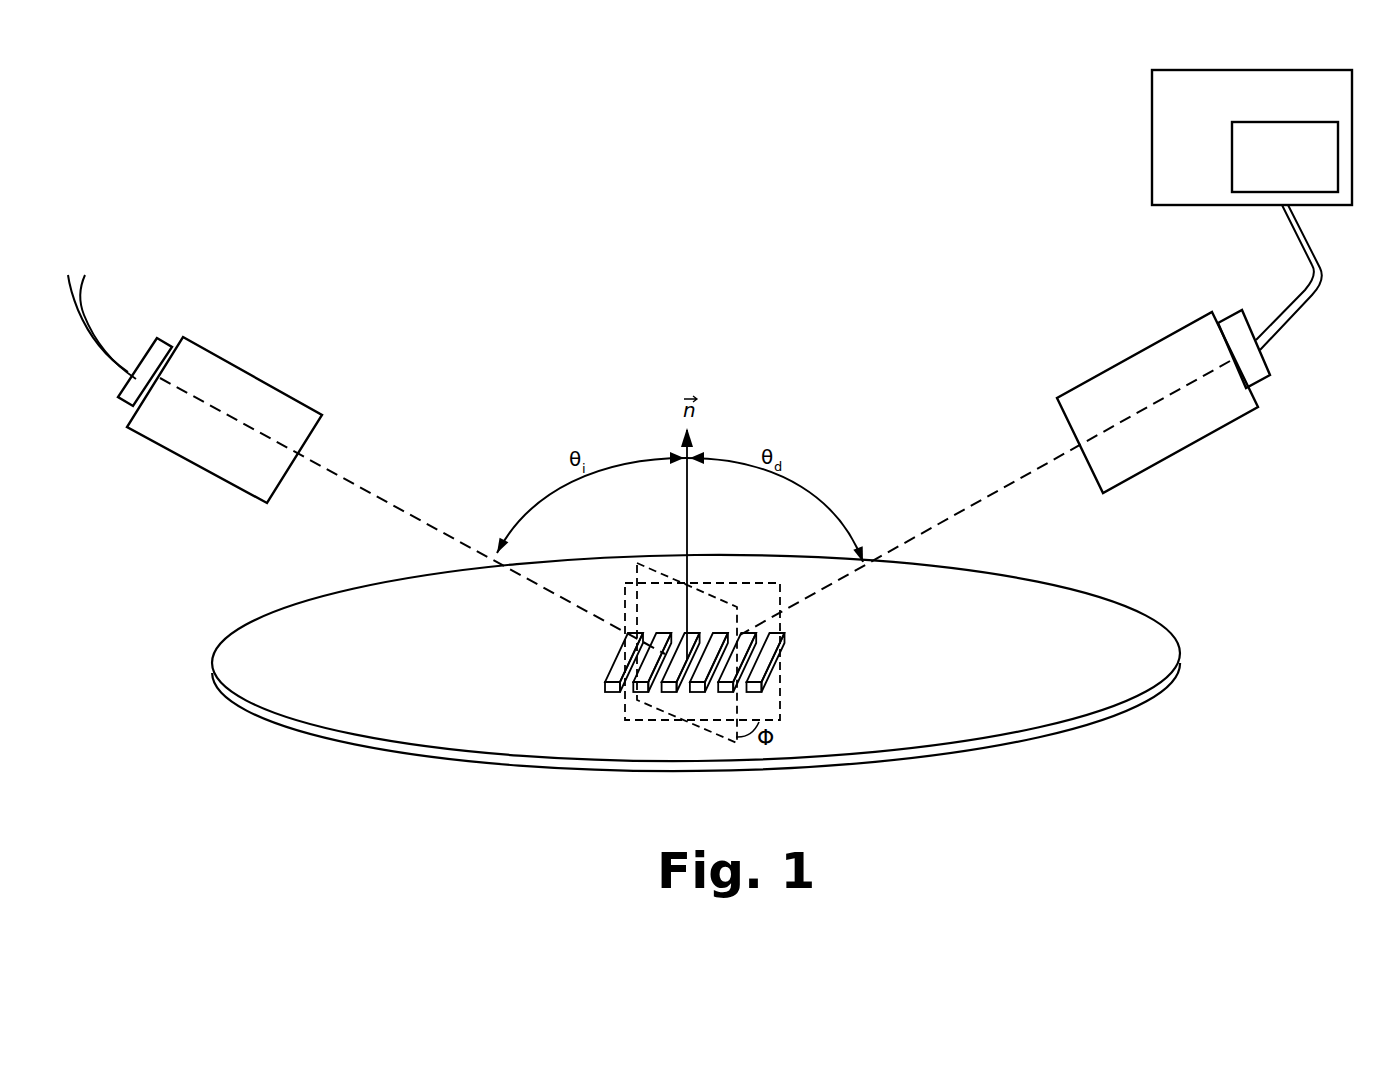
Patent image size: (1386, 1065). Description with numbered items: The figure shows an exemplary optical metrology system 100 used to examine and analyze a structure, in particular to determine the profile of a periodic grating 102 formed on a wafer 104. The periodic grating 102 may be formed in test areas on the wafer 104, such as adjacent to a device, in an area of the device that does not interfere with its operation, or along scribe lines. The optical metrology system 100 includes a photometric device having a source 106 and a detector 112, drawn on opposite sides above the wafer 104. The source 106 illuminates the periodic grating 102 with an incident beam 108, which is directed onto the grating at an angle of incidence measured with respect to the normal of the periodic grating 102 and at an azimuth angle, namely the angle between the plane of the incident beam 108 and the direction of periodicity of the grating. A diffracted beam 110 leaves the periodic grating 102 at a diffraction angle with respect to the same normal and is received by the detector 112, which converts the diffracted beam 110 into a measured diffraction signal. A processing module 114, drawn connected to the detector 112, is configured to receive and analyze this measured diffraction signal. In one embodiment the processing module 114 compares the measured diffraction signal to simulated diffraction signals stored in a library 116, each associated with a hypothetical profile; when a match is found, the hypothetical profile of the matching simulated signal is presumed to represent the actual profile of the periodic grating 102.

The optical metrology system 100 is at (268, 160).
The periodic grating 102 is at (604, 710).
The wafer 104 is at (293, 603).
The source 106 is at (227, 360).
The incident beam 108 is at (333, 473).
The diffracted beam 110 is at (972, 480).
The detector 112 is at (1257, 397).
The processing module 114 is at (1252, 137).
The library 116 is at (1285, 157).